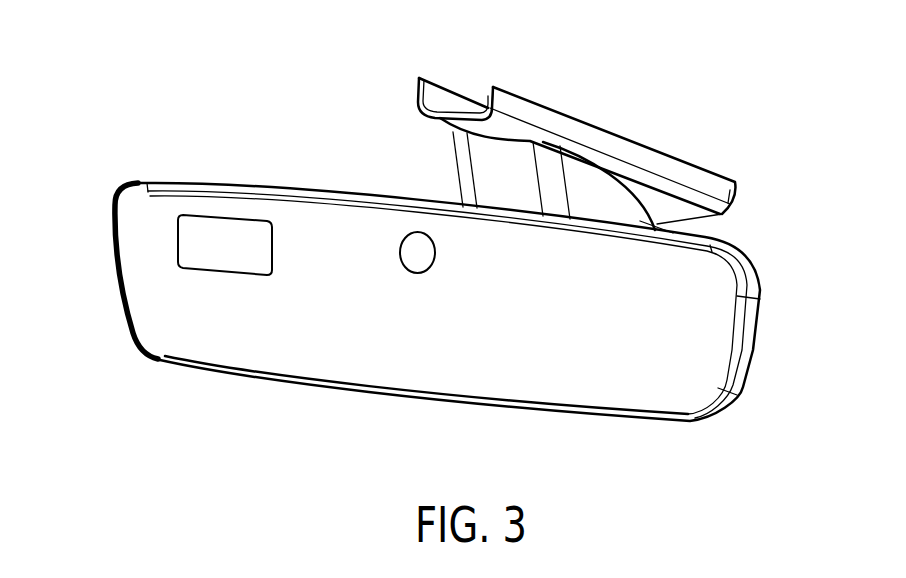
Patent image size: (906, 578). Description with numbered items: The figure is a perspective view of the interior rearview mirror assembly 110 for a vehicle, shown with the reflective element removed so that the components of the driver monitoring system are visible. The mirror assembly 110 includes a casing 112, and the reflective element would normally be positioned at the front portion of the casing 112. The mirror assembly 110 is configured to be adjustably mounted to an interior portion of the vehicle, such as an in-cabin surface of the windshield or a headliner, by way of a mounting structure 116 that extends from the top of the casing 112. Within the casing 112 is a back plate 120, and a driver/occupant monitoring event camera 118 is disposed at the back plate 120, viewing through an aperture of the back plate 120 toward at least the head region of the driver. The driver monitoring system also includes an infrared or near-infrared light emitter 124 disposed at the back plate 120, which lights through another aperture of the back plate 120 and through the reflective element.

The interior rearview mirror assembly 110 is at (768, 119).
The casing 112 is at (733, 395).
The mounting structure 116 is at (552, 120).
The driver/occupant monitoring event camera 118 is at (400, 256).
The back plate 120 is at (363, 363).
The light emitter 124 is at (207, 238).